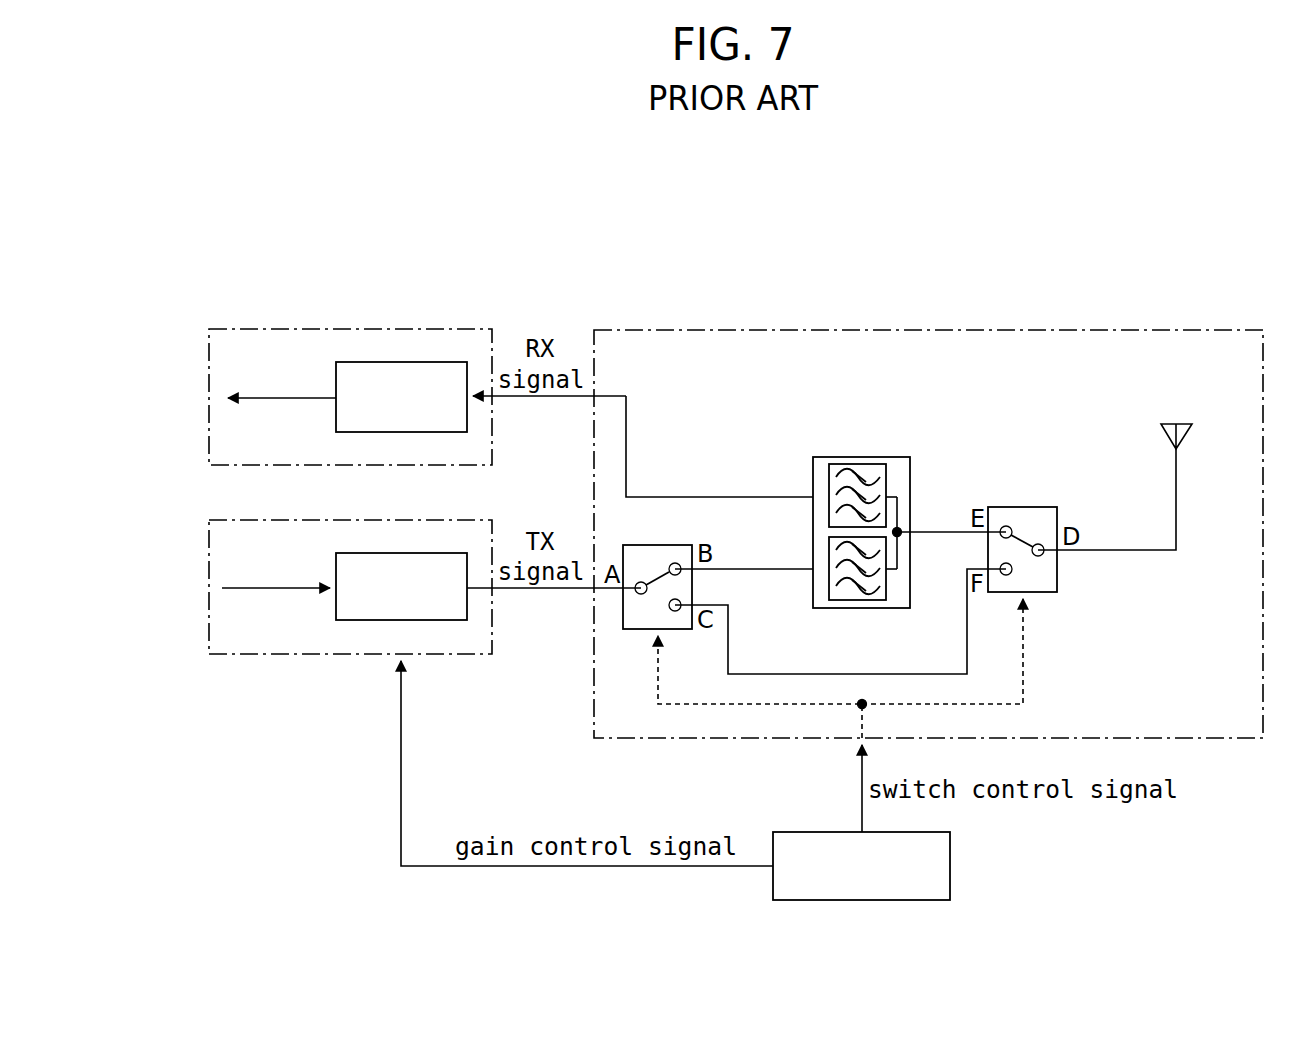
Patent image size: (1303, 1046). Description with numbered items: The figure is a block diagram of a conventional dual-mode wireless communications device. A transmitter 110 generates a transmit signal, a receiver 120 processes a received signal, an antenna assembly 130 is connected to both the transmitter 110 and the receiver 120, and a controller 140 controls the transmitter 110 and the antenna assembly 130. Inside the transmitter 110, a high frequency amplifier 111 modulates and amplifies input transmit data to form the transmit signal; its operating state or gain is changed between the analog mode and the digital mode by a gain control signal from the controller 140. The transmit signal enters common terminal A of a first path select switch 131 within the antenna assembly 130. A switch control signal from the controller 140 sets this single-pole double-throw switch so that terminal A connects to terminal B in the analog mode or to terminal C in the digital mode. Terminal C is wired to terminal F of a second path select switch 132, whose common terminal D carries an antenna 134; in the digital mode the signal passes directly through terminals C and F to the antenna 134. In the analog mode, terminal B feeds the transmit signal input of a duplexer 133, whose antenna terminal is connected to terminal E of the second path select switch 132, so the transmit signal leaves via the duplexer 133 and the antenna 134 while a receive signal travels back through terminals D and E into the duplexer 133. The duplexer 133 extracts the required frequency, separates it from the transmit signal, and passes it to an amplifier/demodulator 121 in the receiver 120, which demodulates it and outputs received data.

The transmitter 110 is at (245, 656).
The high frequency amplifier 111 is at (333, 608).
The receiver 120 is at (251, 328).
The amplifier/demodulator 121 is at (333, 418).
The antenna assembly 130 is at (1100, 329).
The first path select switch 131 is at (647, 545).
The second path select switch 132 is at (1022, 507).
The duplexer 133 is at (879, 457).
The antenna 134 is at (1181, 446).
The controller 140 is at (950, 866).